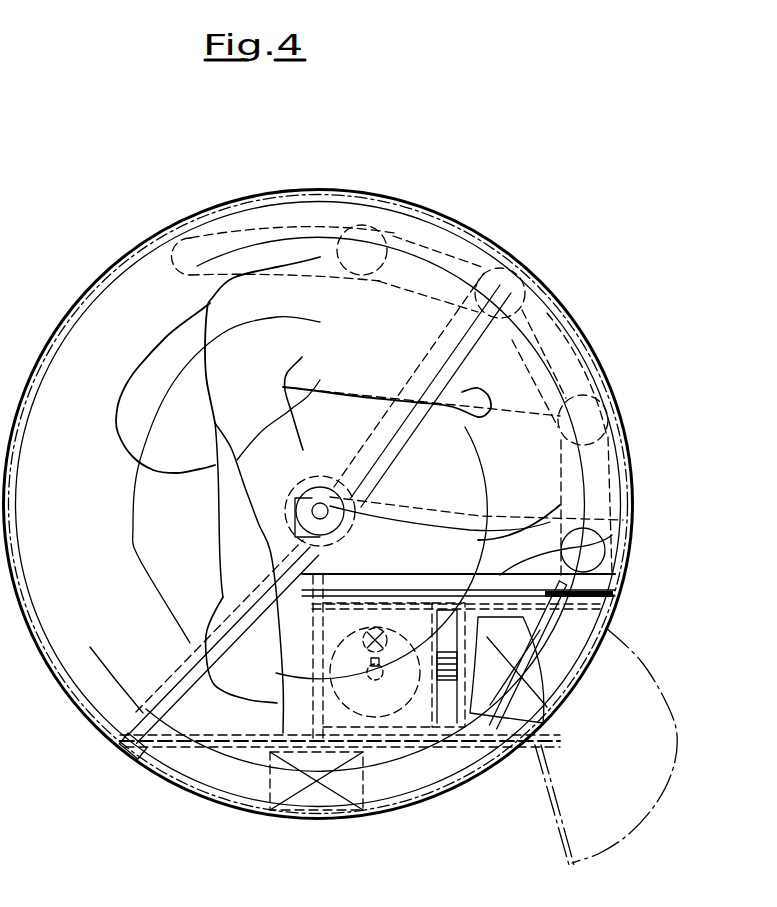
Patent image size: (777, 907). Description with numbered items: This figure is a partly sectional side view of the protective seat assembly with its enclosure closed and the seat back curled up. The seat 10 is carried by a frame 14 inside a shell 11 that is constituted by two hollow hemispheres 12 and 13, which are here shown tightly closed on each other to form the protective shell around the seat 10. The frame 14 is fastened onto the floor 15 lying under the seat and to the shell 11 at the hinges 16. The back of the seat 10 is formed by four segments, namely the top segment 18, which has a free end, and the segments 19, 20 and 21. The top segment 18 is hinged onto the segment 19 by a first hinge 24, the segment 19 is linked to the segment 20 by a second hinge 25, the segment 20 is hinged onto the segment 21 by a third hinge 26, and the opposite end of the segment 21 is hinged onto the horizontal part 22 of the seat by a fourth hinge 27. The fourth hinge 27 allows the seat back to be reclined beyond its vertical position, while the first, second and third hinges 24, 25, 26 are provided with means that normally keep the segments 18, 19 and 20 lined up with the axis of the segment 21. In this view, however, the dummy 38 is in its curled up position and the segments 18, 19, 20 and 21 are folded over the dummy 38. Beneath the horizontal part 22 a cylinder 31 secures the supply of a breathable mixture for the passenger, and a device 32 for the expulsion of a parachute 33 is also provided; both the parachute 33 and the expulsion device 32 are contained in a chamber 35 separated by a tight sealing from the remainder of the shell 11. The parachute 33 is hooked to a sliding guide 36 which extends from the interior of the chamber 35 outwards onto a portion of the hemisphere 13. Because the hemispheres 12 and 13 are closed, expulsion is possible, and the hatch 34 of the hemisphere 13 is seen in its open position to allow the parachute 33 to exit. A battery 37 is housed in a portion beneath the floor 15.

The seat 10 is at (402, 236).
The shell 11 is at (114, 258).
The hollow hemisphere 12 is at (82, 688).
The hollow hemisphere 13 is at (224, 790).
The frame 14 is at (618, 592).
The floor 15 is at (488, 757).
The hinges 16 is at (325, 488).
The top segment 18 is at (272, 240).
The segment 19 is at (457, 258).
The segment 20 is at (577, 337).
The segment 21 is at (603, 467).
The horizontal part 22 is at (407, 502).
The first hinge 24 is at (362, 240).
The second hinge 25 is at (500, 268).
The third hinge 26 is at (603, 392).
The fourth hinge 27 is at (628, 530).
The cylinder 31 is at (330, 682).
The expulsion device 32 is at (438, 740).
The parachute 33 is at (552, 683).
The hatch 34 is at (590, 645).
The chamber 35 is at (613, 612).
The sliding guide 36 is at (493, 583).
The battery 37 is at (362, 800).
The dummy 38 is at (153, 465).